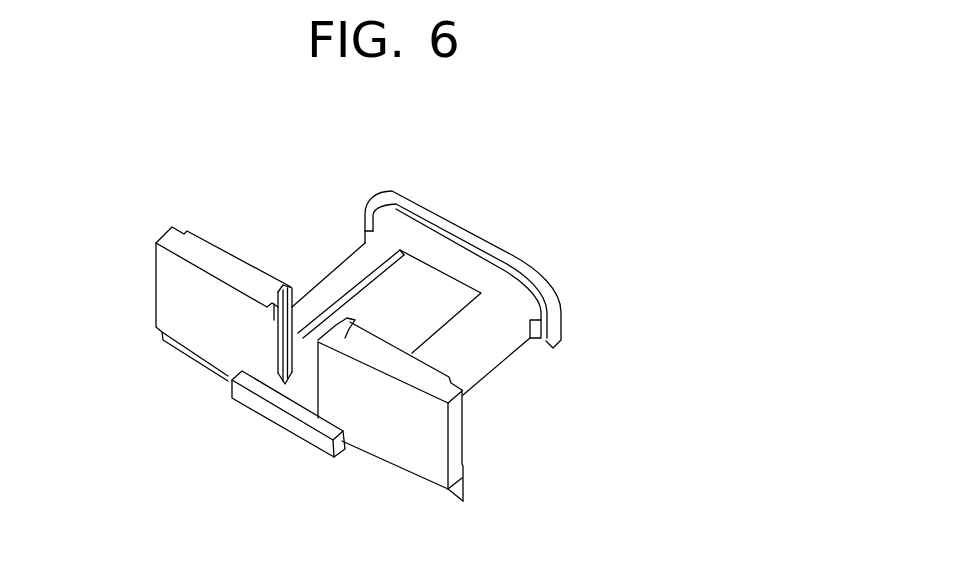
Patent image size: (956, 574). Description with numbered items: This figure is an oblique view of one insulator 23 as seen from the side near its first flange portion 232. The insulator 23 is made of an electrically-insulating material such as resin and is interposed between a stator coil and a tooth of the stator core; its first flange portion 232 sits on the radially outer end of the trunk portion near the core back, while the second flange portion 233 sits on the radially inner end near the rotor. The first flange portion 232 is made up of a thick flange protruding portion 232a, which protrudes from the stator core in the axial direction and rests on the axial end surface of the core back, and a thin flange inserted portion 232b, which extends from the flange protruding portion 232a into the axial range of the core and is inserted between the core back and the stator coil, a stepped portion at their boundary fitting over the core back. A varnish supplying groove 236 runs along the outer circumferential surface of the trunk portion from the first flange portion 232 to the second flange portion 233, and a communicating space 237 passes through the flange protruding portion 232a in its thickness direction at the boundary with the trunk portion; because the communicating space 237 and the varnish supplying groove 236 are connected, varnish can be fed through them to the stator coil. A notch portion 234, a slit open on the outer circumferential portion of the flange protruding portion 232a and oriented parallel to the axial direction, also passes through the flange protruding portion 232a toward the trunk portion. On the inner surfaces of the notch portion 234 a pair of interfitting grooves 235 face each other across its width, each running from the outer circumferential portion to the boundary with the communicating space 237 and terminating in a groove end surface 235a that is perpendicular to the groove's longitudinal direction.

The insulator 23 is at (385, 166).
The first flange portion 232 is at (186, 236).
The flange protruding portion 232a is at (463, 443).
The flange inserted portion 232b is at (462, 494).
The second flange portion 233 is at (554, 284).
The notch portion 234 is at (276, 344).
The interfitting grooves 235 is at (281, 291).
The groove end surface 235a is at (273, 360).
The varnish supplying groove 236 is at (437, 286).
The communicating space 237 is at (302, 396).